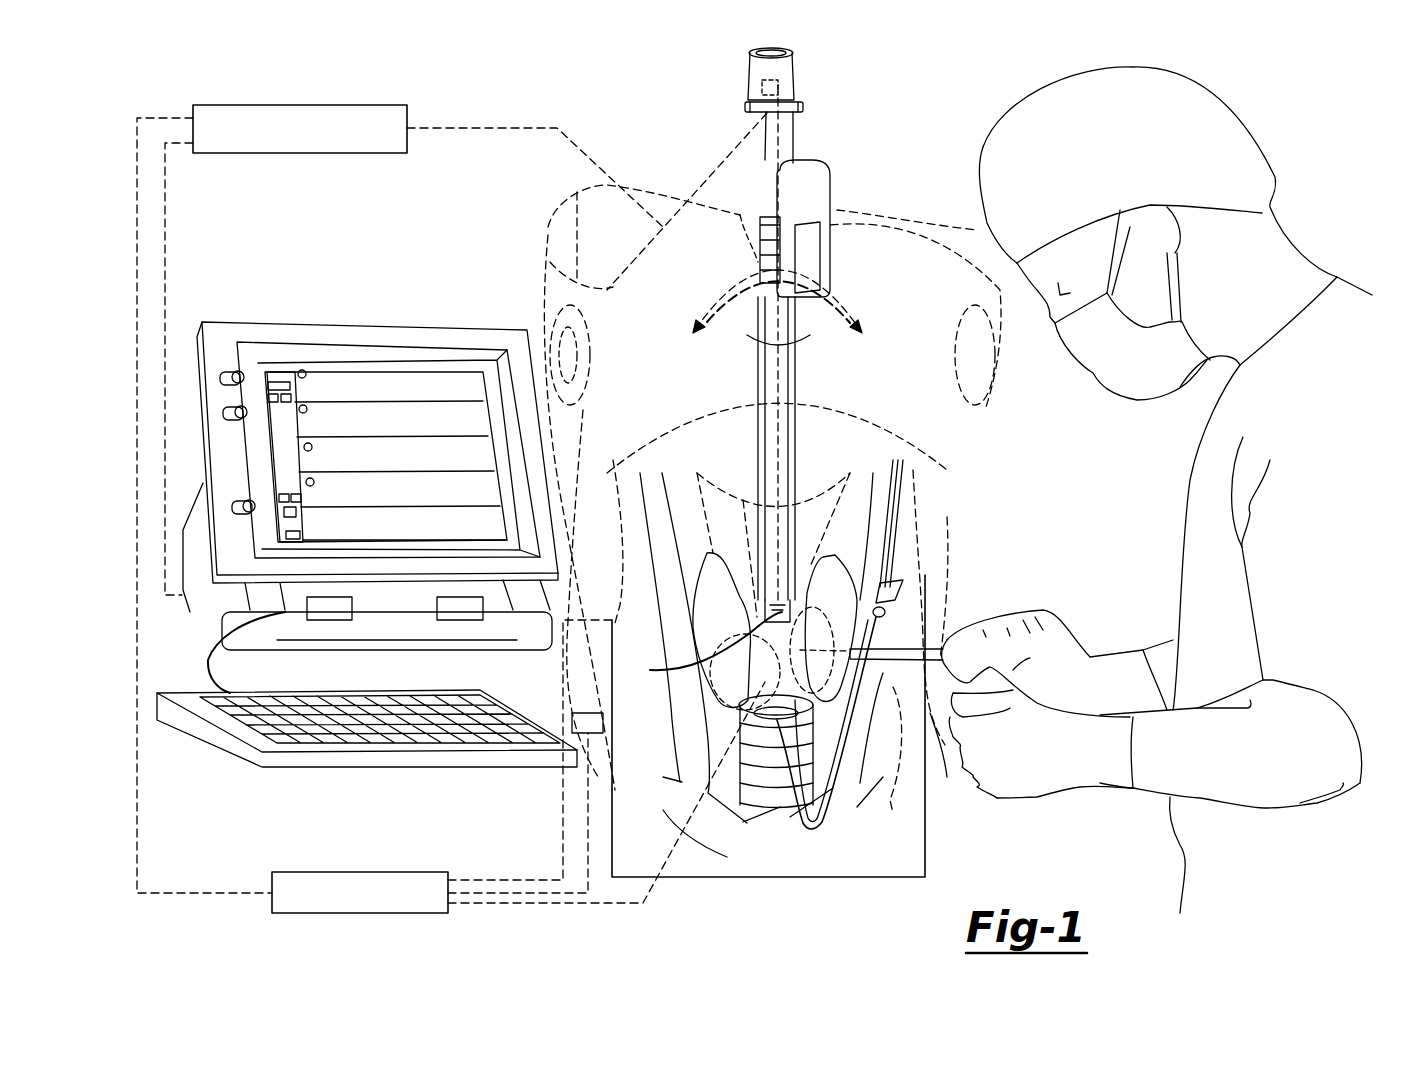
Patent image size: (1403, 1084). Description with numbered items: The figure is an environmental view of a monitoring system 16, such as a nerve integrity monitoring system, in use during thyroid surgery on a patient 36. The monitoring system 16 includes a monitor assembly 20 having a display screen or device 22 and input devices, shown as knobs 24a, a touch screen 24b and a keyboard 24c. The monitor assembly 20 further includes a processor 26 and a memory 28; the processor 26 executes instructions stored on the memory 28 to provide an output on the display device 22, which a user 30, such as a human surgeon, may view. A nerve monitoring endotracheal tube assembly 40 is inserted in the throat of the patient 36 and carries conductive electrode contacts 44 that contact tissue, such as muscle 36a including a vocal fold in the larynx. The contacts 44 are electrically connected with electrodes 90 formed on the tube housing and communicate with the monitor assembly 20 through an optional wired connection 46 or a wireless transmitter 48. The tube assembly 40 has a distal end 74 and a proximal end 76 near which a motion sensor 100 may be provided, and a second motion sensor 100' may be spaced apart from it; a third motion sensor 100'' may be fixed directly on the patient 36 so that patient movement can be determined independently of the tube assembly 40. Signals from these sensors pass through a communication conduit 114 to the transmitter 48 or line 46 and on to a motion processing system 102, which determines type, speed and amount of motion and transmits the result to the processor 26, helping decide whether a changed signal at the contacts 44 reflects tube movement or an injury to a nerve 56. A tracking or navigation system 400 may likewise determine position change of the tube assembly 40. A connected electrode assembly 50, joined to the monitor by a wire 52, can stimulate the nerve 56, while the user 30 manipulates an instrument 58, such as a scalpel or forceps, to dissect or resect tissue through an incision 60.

The monitoring system 16 is at (400, 245).
The monitor assembly 20 is at (350, 302).
The display screen or device 22 is at (378, 380).
The knobs 24a is at (220, 372).
The touch screen 24b is at (280, 438).
The keyboard 24c is at (410, 762).
The processor 26 is at (208, 650).
The memory 28 is at (437, 612).
The user 30 is at (1197, 558).
The patient 36 is at (947, 517).
The muscle 36a is at (712, 568).
The nerve monitoring endotracheal tube assembly 40 is at (814, 77).
The electrode contacts 44 is at (773, 603).
The wired connection 46 is at (565, 250).
The wireless transmitter 48 is at (790, 135).
The connected electrode assembly 50 is at (903, 583).
The wire 52 is at (922, 866).
The nerve 56 is at (890, 578).
The instrument 58 is at (908, 740).
The incision 60 is at (890, 810).
The tube distal end 74 is at (712, 165).
The tube proximal end 76 is at (800, 832).
The electrodes 90 is at (758, 337).
The motion sensor 100 is at (868, 517).
The second motion sensor 100' is at (690, 77).
The third motion sensor 100'' is at (588, 684).
The motion processing system 102 is at (218, 105).
The communication conduit 114 is at (858, 345).
The tracking or navigation system 400 is at (313, 872).